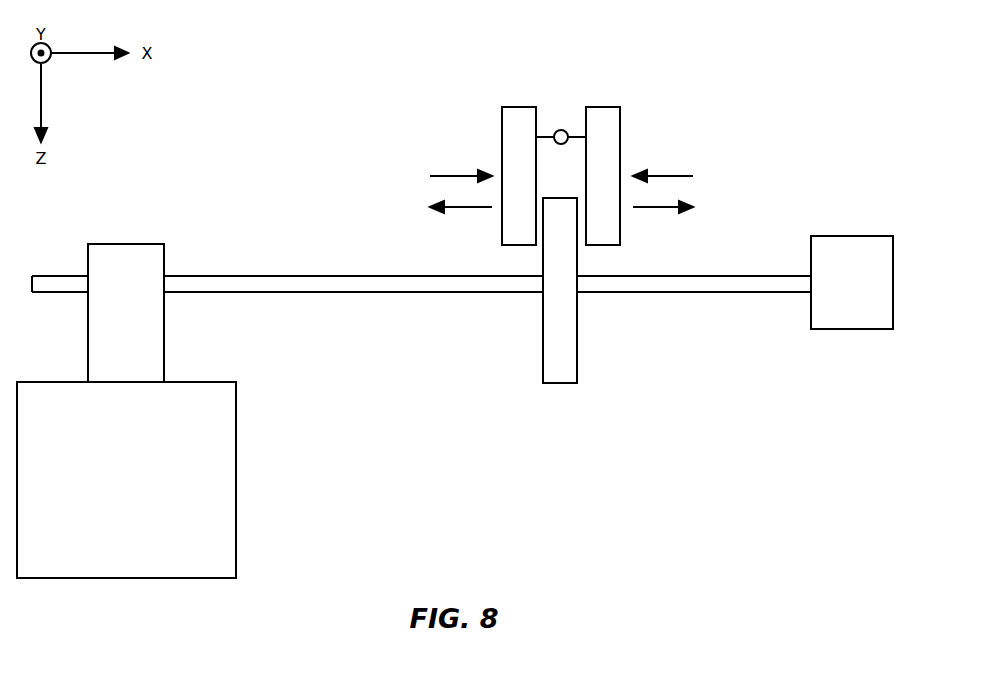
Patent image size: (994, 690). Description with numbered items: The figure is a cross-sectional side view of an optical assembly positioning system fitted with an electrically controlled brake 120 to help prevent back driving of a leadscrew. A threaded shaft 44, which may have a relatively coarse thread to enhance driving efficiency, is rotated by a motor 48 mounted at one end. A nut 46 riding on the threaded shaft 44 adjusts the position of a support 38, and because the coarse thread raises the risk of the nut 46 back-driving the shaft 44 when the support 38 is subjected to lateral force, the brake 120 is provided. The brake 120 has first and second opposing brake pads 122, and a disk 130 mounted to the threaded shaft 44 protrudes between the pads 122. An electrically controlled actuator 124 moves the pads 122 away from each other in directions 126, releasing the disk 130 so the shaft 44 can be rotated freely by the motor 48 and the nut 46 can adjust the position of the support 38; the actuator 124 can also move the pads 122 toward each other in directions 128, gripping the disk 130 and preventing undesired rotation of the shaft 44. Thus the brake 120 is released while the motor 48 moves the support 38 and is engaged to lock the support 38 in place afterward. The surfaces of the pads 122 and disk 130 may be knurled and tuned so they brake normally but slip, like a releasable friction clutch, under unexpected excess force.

The support 38 is at (236, 481).
The nut 46 is at (124, 255).
The threaded shaft 44 is at (770, 280).
The motor 48 is at (852, 245).
The electrically controlled brake 120 is at (549, 158).
The brake pads 122 is at (517, 112).
The electrically controlled actuator 124 is at (561, 128).
The directions 126 is at (457, 208).
The directions 128 is at (441, 176).
The disk 130 is at (567, 358).